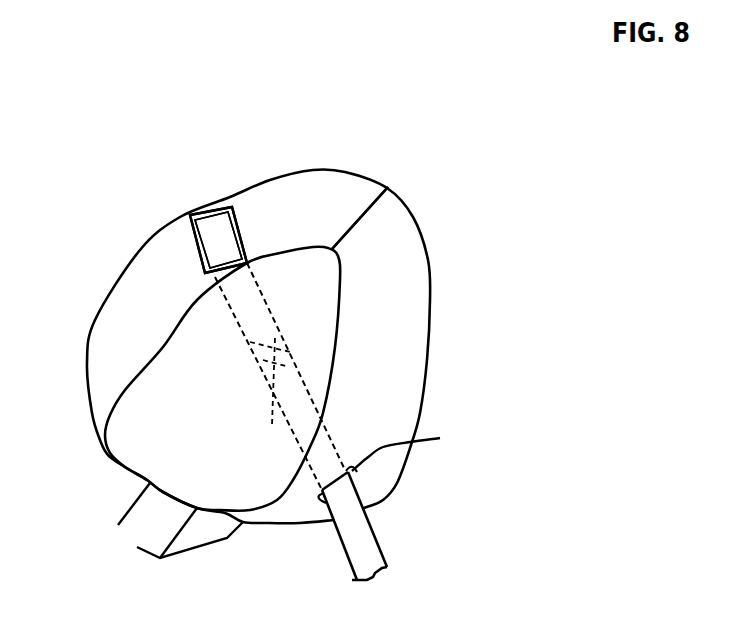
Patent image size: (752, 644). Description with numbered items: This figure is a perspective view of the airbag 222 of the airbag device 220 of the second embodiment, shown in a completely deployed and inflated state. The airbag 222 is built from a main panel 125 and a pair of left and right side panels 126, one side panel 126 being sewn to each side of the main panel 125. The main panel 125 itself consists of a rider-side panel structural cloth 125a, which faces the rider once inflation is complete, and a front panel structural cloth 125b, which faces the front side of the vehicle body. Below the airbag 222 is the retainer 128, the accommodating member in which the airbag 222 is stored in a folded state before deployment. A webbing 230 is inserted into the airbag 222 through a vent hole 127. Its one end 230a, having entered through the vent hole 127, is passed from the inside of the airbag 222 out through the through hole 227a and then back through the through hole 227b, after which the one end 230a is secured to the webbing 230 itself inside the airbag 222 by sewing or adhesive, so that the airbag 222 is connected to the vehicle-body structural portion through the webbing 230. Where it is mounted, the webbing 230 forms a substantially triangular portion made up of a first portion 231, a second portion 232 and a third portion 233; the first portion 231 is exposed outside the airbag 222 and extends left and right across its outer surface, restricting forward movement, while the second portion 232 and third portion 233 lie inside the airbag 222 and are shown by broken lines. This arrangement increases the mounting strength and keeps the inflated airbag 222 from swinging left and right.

The airbag device 220 is at (511, 248).
The airbag 222 is at (322, 164).
The main panel 125 is at (480, 125).
The rider-side panel structural cloth 125a is at (403, 250).
The front panel structural cloth 125b is at (343, 193).
The side panel 126 is at (147, 431).
The vent hole 127 is at (417, 447).
The retainer 128 is at (212, 552).
The through hole 227a is at (220, 205).
The through hole 227b is at (190, 250).
The first portion 231 is at (213, 237).
The second portion 232 is at (240, 318).
The third portion 233 is at (296, 366).
The webbing 230 is at (370, 527).
The one end of the webbing 230a is at (273, 402).